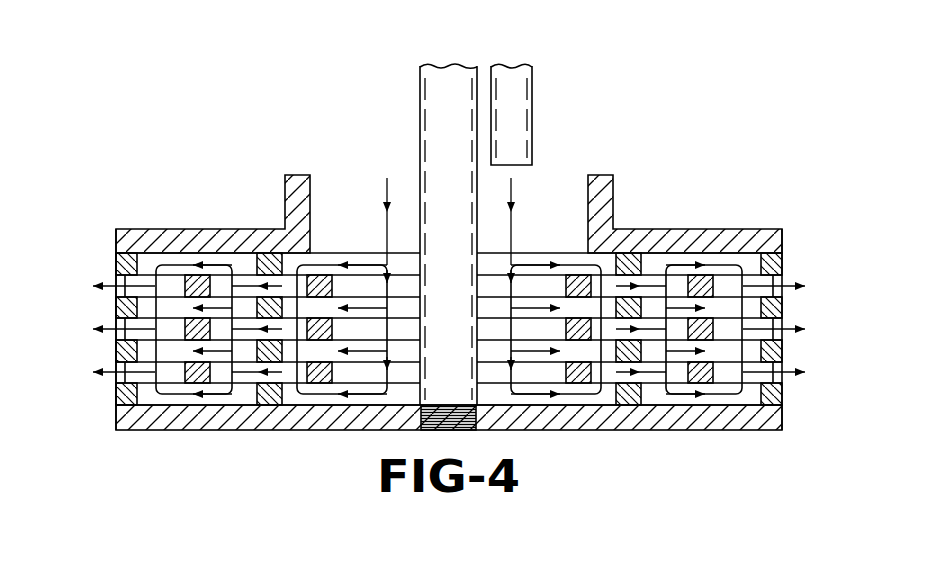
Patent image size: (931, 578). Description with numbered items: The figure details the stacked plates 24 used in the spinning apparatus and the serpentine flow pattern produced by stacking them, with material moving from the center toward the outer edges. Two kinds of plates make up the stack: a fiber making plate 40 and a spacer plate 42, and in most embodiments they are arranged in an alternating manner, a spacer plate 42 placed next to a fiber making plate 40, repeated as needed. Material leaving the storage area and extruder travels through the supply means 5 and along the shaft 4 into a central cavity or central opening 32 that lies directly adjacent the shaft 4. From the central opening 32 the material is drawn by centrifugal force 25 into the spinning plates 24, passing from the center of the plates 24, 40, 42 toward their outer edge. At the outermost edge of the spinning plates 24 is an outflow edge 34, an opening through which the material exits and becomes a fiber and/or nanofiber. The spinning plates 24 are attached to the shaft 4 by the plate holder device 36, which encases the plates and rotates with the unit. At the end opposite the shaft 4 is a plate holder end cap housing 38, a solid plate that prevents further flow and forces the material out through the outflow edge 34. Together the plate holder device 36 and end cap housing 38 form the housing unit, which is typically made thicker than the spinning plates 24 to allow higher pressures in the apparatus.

The shaft 4 is at (447, 88).
The supply means 5 is at (533, 90).
The stacked plates 24 is at (633, 263).
The centrifugal force 25 is at (297, 268).
The central opening 32 is at (365, 195).
The outflow edge 34 is at (115, 278).
The plate holder device 36 is at (290, 210).
The plate holder end cap housing 38 is at (730, 418).
The fiber making plate 40 is at (200, 290).
The spacer plate 42 is at (127, 303).